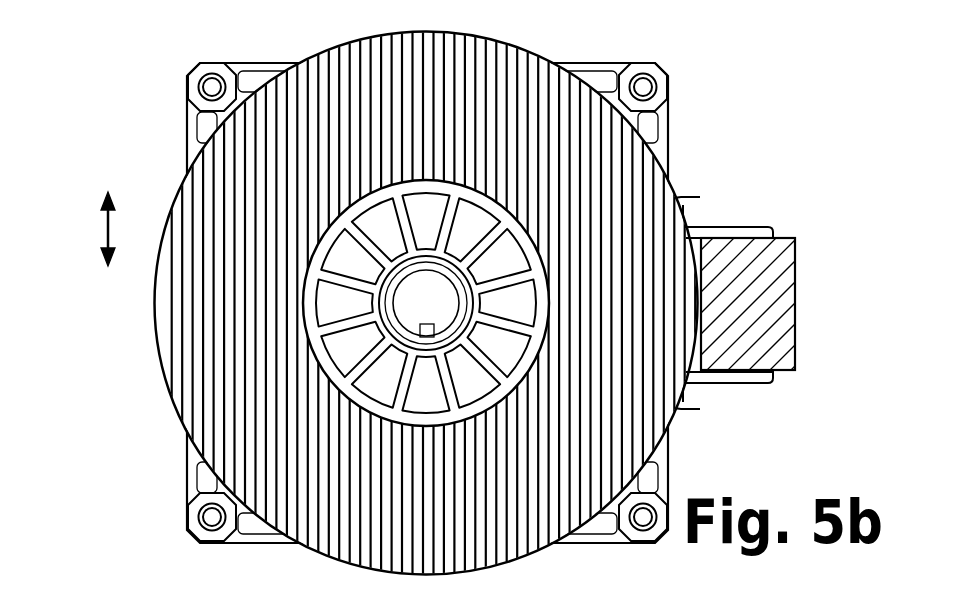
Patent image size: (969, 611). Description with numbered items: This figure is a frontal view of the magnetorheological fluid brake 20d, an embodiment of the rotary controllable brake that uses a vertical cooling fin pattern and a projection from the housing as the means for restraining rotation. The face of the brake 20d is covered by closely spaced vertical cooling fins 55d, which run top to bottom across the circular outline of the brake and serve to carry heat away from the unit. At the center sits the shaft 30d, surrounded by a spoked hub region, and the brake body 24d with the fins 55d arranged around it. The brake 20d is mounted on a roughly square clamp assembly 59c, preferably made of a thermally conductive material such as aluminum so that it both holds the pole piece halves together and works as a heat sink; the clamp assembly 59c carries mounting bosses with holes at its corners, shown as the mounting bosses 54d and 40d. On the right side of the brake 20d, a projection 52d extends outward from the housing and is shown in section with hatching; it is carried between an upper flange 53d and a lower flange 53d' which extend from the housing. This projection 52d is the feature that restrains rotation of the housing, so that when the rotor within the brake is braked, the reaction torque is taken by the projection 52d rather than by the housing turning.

The magnetorheological fluid brake 20d is at (158, 318).
The cooling fins 24d is at (500, 40).
The fan hub 30d is at (410, 314).
The mounting hole boss 40d is at (652, 72).
The connector 52d is at (729, 314).
The upper connector flange 53d is at (744, 196).
The lower connector flange 53d' is at (731, 423).
The mounting hole boss 54d is at (235, 68).
The fan shroud 55d is at (180, 392).
The clamp assembly 59c is at (439, 271).